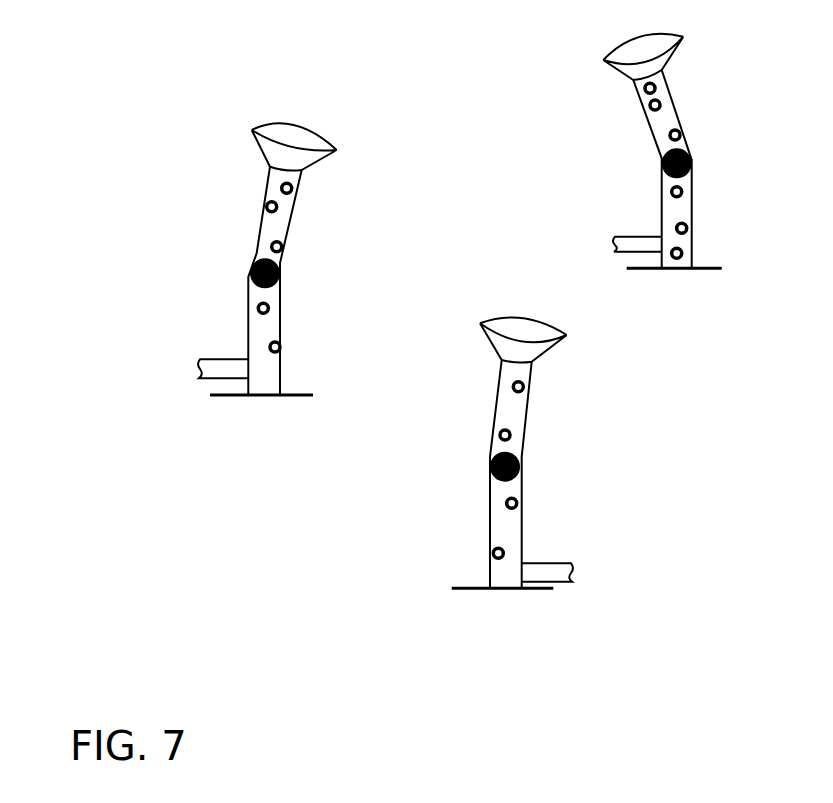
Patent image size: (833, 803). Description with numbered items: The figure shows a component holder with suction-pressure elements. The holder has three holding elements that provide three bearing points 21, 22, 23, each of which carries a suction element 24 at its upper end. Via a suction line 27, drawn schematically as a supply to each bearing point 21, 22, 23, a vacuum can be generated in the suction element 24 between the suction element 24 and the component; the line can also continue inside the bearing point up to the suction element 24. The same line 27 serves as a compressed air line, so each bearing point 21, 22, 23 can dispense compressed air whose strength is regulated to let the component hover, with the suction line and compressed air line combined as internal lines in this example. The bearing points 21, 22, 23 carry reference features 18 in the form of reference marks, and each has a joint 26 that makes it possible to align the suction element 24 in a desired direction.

The reference feature 18 is at (263, 202).
The bearing point 21 is at (249, 287).
The bearing point 22 is at (538, 612).
The bearing point 23 is at (725, 287).
The suction element 24 is at (316, 142).
The joint 26 is at (282, 280).
The suction line 27 is at (217, 365).